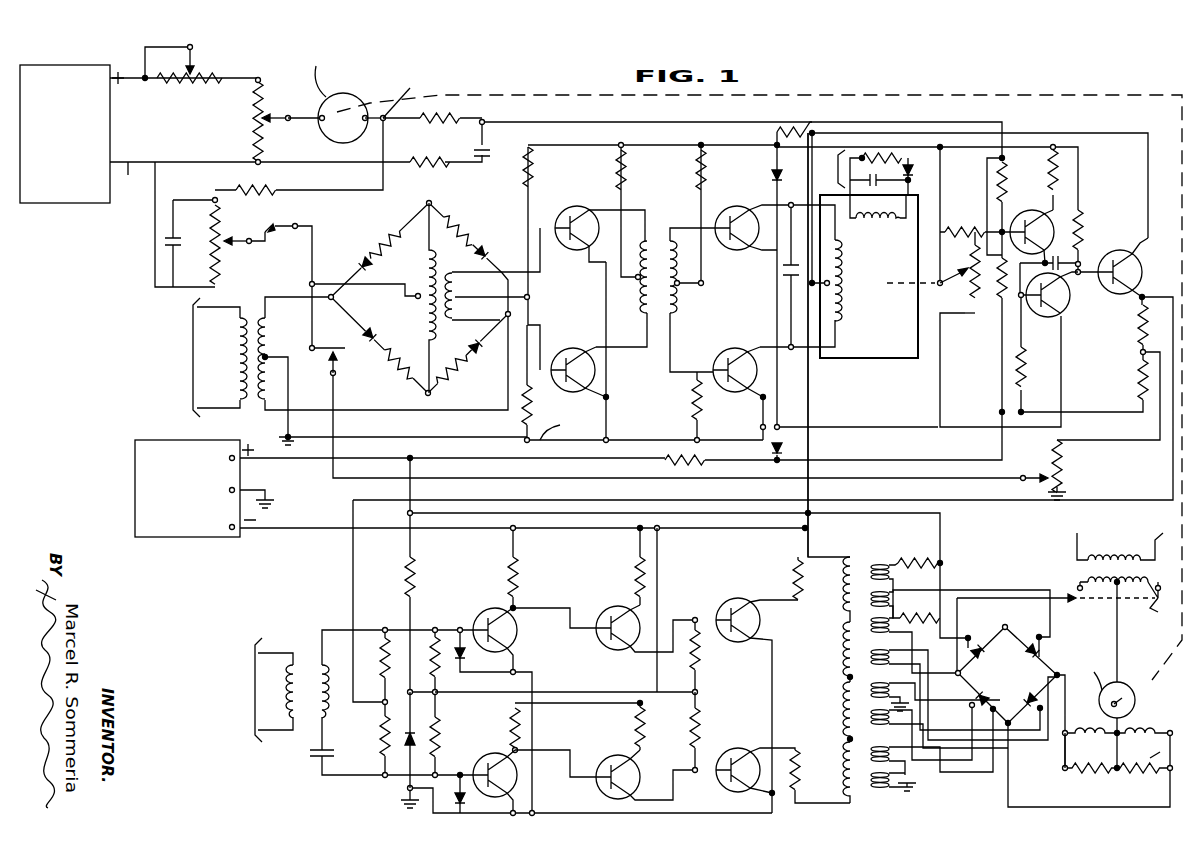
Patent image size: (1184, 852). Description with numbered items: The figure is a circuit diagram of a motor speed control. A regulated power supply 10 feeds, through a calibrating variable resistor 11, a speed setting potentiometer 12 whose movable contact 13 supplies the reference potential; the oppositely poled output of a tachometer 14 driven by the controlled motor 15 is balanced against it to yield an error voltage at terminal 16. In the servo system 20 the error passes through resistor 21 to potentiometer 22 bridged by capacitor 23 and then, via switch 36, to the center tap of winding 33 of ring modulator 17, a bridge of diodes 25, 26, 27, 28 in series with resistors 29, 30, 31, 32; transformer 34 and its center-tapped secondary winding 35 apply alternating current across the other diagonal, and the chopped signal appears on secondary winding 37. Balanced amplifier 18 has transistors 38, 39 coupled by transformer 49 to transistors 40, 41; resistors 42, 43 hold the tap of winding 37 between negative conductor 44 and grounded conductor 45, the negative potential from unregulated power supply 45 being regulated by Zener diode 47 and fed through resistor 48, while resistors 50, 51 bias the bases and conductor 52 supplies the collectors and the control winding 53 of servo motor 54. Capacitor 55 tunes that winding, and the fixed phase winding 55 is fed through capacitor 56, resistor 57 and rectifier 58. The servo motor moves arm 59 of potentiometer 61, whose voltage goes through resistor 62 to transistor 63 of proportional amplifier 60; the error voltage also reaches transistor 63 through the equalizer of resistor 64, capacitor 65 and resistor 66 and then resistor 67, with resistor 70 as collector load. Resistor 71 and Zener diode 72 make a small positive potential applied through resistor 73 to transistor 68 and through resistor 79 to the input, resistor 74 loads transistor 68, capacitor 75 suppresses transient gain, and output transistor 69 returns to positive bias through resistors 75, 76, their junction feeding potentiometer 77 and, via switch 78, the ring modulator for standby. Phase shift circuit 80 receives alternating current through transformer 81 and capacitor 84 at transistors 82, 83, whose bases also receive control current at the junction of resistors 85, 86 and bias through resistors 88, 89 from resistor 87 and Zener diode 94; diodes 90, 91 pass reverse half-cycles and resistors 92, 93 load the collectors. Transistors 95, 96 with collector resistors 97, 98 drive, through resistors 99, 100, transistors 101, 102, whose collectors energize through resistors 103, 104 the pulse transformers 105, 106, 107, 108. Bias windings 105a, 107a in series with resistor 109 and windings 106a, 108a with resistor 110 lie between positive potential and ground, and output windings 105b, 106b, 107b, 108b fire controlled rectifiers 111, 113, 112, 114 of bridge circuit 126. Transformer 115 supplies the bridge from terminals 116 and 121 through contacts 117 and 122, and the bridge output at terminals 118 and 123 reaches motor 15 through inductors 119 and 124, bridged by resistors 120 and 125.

The regulated power supply 10 is at (45, 82).
The variable resistor 11 is at (197, 68).
The speed setting potentiometer 12 is at (262, 96).
The movable contact 13 is at (278, 122).
The tachometer 14 is at (346, 100).
The controlled motor 15 is at (1126, 698).
The terminal 16 is at (396, 92).
The ring modulator 17 is at (414, 293).
The balanced amplifier 18 is at (668, 182).
The servo system 20 is at (580, 132).
The resistor 21 is at (266, 188).
The potentiometer 22 is at (220, 226).
The capacitor 23 is at (176, 236).
The diode 25 is at (362, 258).
The diode 26 is at (488, 246).
The diode 27 is at (374, 328).
The diode 28 is at (480, 356).
The resistor 29 is at (386, 230).
The resistor 30 is at (452, 222).
The resistor 31 is at (454, 380).
The resistor 32 is at (388, 368).
The winding 33 is at (422, 278).
The transformer 34 is at (250, 318).
The secondary winding 35 is at (275, 352).
The switch 36 is at (272, 216).
The secondary winding 37 is at (458, 292).
The transistor 38 is at (580, 250).
The transistor 39 is at (578, 348).
The transistor 40 is at (732, 250).
The transistor 41 is at (742, 352).
The resistor 42 is at (536, 182).
The resistor 43 is at (539, 414).
The conductor 44 is at (530, 142).
The unregulated power supply 45 is at (135, 474).
The Zener diode 47 is at (770, 176).
The resistor 48 is at (628, 182).
The transformer 49 is at (656, 238).
The resistor 50 is at (708, 180).
The resistor 51 is at (690, 408).
The conductor 52 is at (810, 404).
The control winding 53 is at (842, 292).
The servo motor 54 is at (869, 276).
The fixed phase winding 55 is at (784, 266).
The capacitor 56 is at (890, 186).
The resistor 57 is at (876, 150).
The rectifier 58 is at (912, 170).
The movable arm 59 is at (946, 288).
The proportional amplifier 60 is at (1042, 126).
The potentiometer 61 is at (970, 306).
The resistor 62 is at (962, 226).
The transistor 63 is at (1018, 210).
The resistor 64 is at (455, 112).
The capacitor 65 is at (478, 150).
The resistor 66 is at (428, 158).
The resistor 67 is at (1006, 184).
The transistor 68 is at (1070, 300).
The transistor 69 is at (1140, 268).
The resistor 70 is at (1058, 178).
The resistor 71 is at (704, 460).
The Zener diode 72 is at (789, 452).
The resistor 73 is at (1026, 380).
The resistor 74 is at (1084, 230).
The capacitor 75 is at (1062, 248).
The resistor 76 is at (1134, 390).
The potentiometer 77 is at (1064, 466).
The switch 78 is at (312, 352).
The resistor 79 is at (1002, 300).
The phase shift circuit 80 is at (696, 548).
The transformer 81 is at (306, 658).
The transistor 82 is at (478, 622).
The transistor 83 is at (482, 758).
The capacitor 84 is at (310, 752).
The resistor 85 is at (378, 650).
The resistor 86 is at (378, 738).
The resistor 87 is at (416, 580).
The resistor 88 is at (430, 640).
The resistor 89 is at (440, 736).
The diode 90 is at (462, 658).
The diode 91 is at (462, 802).
The resistor 92 is at (518, 580).
The resistor 93 is at (522, 732).
The Zener diode 94 is at (400, 732).
The transistor 95 is at (606, 614).
The transistor 96 is at (608, 766).
The resistor 97 is at (632, 578).
The resistor 98 is at (632, 726).
The resistor 99 is at (704, 652).
The resistor 100 is at (700, 736).
The transistor 101 is at (722, 616).
The transistor 102 is at (732, 754).
The resistor 103 is at (790, 582).
The resistor 104 is at (784, 746).
The pulse transformer 105 is at (842, 598).
The bias winding 105a is at (880, 562).
The output winding 105b is at (902, 596).
The pulse transformer 106 is at (842, 645).
The bias winding 106a is at (842, 626).
The output winding 106b is at (842, 662).
The pulse transformer 107 is at (842, 712).
The bias winding 107a is at (846, 692).
The output winding 107b is at (842, 732).
The pulse transformer 108 is at (842, 775).
The bias winding 108a is at (842, 755).
The output winding 108b is at (842, 796).
The resistor 109 is at (934, 554).
The resistor 110 is at (930, 612).
The controlled rectifier 111 is at (1034, 638).
The controlled rectifier 112 is at (984, 654).
The controlled rectifier 113 is at (1033, 691).
The controlled rectifier 114 is at (992, 691).
The transformer 115 is at (1082, 560).
The terminal 116 is at (1078, 582).
The contacts 117 is at (1117, 609).
The terminal 118 is at (1062, 760).
The inductor 119 is at (1094, 730).
The resistor 120 is at (1096, 776).
The terminal 121 is at (1154, 600).
The contacts 122 is at (1154, 612).
The terminal 123 is at (1166, 728).
The inductor 124 is at (1144, 756).
The resistor 125 is at (1144, 776).
The bridge circuit 126 is at (1059, 676).